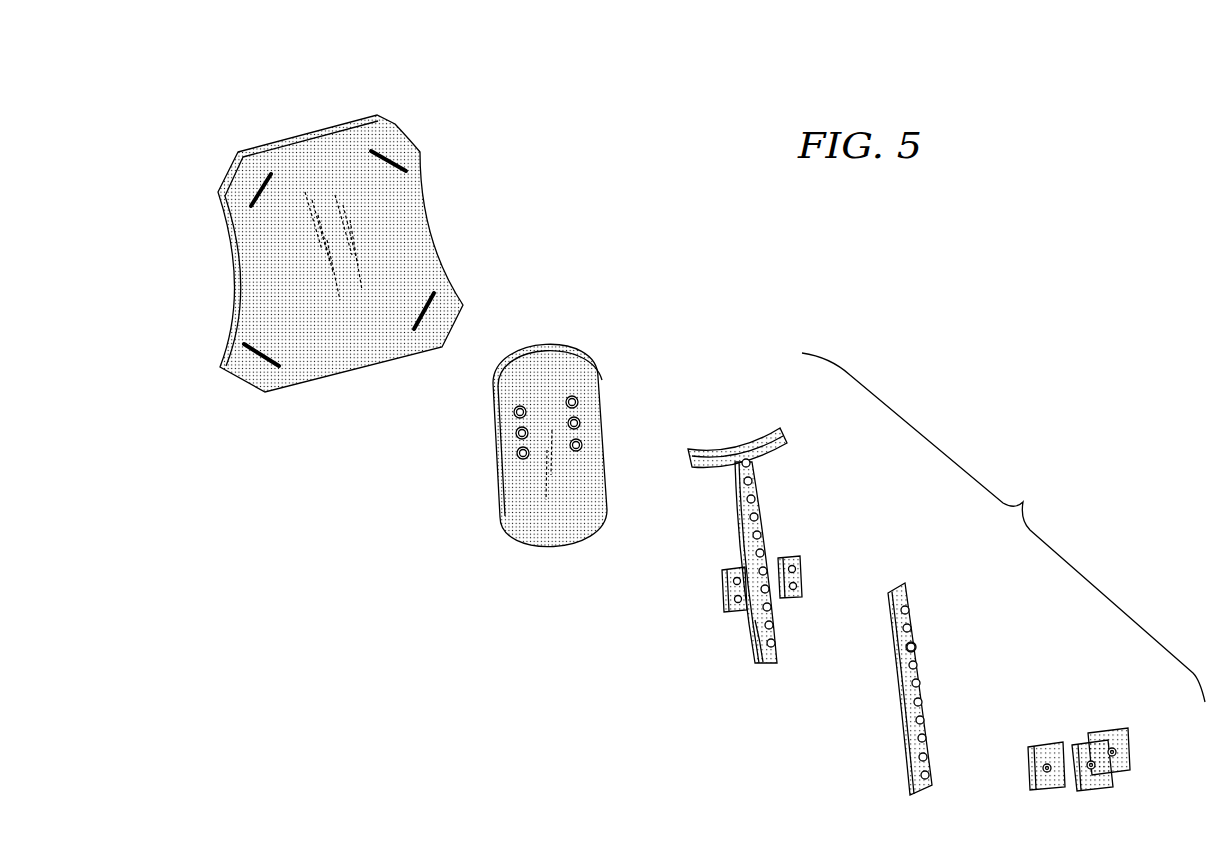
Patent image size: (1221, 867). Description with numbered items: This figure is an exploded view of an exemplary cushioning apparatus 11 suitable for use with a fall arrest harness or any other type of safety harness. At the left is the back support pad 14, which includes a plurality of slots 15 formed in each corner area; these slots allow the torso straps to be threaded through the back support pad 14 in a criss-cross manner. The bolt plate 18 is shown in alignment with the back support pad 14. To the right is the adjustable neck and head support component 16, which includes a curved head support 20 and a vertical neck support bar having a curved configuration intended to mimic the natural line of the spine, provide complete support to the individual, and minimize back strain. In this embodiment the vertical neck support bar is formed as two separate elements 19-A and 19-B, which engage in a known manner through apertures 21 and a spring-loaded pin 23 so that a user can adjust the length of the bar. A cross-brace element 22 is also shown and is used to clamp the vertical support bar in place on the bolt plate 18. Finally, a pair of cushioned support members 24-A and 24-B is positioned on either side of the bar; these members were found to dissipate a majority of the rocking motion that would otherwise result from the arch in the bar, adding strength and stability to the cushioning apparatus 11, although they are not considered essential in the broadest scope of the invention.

The cushioning apparatus 11 is at (802, 238).
The back support pad 14 is at (433, 230).
The slots 15 is at (388, 155).
The adjustable neck and head support component 16 is at (1048, 495).
The bolt plate 18 is at (550, 365).
The vertical neck support bar element 19-A is at (760, 490).
The vertical neck support bar element 19-B is at (907, 600).
The curved head support 20 is at (783, 432).
The apertures 21 is at (763, 623).
The cross-brace element 22 is at (1130, 740).
The spring-loaded pin 23 is at (918, 647).
The cushioned support member 24-A is at (722, 587).
The cushioned support member 24-B is at (800, 580).